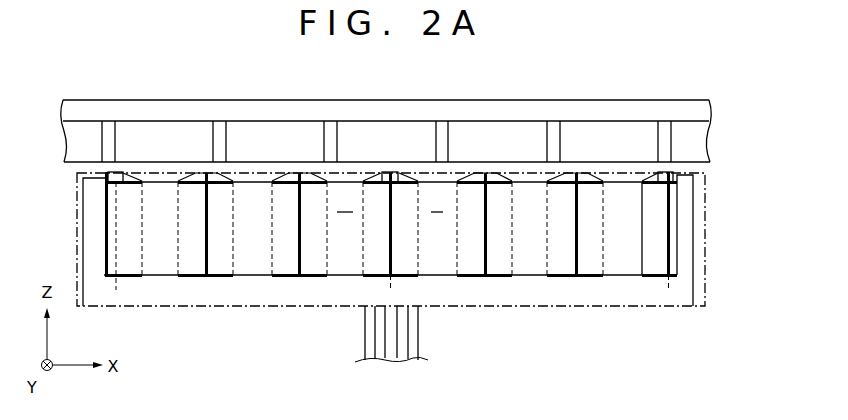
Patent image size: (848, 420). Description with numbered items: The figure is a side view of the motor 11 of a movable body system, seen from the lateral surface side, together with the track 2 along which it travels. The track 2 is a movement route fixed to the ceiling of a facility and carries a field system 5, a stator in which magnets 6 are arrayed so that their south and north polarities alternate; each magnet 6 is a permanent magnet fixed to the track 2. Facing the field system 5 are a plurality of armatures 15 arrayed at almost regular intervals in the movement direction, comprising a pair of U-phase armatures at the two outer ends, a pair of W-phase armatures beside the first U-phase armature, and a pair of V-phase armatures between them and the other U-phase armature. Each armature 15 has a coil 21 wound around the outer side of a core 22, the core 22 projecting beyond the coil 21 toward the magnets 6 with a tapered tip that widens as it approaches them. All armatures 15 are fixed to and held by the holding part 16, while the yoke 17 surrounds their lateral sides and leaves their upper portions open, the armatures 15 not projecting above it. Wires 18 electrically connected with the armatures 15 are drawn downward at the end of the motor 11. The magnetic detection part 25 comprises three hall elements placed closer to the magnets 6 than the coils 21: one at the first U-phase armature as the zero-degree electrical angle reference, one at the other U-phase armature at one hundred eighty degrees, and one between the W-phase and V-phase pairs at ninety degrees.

The track 2 is at (335, 100).
The field system 5 is at (717, 121).
The magnet 6 is at (387, 118).
The motor 11 is at (693, 328).
The armature 15 is at (150, 323).
The holding part 16 is at (693, 222).
The yoke 17 is at (707, 250).
The wires 18 is at (399, 359).
The coil 21 is at (187, 203).
The core 22 is at (152, 253).
The magnetic detection part 25 is at (410, 120).